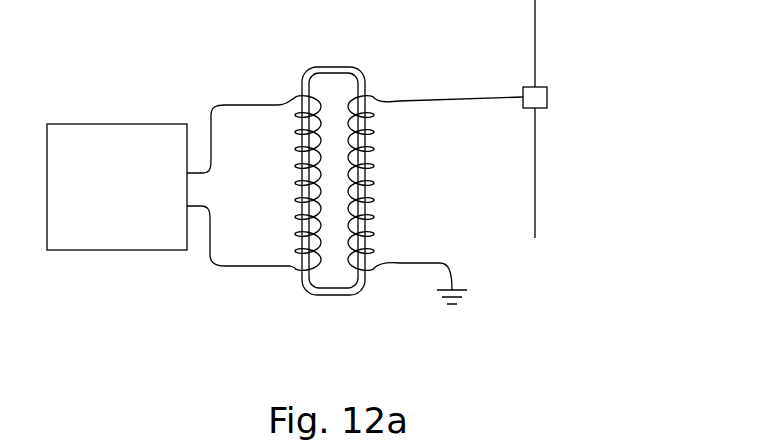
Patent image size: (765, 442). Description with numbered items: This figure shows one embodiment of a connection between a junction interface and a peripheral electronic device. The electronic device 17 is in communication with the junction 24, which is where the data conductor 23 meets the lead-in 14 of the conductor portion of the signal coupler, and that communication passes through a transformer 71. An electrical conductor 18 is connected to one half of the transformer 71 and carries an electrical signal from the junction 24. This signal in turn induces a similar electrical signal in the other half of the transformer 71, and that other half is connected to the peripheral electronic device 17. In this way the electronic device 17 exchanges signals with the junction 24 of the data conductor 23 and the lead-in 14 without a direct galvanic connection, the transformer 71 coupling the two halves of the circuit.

The lead-in 14 is at (535, 195).
The electronic device 17 is at (146, 241).
The electrical conductor 18 is at (427, 100).
The data conductor 23 is at (535, 53).
The junction 24 is at (540, 97).
The transformer 71 is at (335, 295).